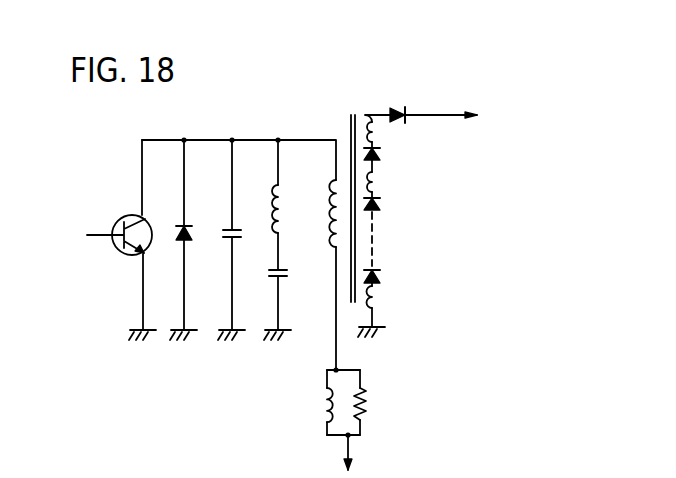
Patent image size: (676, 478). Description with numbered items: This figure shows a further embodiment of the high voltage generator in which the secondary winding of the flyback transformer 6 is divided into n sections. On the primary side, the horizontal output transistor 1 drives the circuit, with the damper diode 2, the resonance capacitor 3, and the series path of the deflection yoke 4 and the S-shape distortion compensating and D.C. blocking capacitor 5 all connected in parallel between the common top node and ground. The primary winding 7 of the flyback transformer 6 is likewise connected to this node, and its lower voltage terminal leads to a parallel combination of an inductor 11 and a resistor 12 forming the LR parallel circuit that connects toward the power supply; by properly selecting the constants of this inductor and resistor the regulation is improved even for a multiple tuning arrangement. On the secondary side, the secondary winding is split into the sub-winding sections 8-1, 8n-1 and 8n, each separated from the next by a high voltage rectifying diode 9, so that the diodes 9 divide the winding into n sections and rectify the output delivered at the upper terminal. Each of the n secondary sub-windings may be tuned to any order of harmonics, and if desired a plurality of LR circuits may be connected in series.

The horizontal output transistor 1 is at (126, 218).
The damper diode 2 is at (182, 226).
The resonance capacitor 3 is at (229, 230).
The deflection yoke 4 is at (273, 216).
The S-shape distortion compensating and D.C. blocking capacitor 5 is at (270, 275).
The flyback transformer 6 is at (357, 113).
The primary winding 7 is at (333, 205).
The secondary winding section 8n is at (376, 135).
The secondary winding section 8n-1 is at (376, 184).
The secondary winding section 8-1 is at (378, 298).
The high voltage rectifying diode 9 is at (403, 110).
The inductor 11 is at (323, 405).
The resistor 12 is at (364, 400).